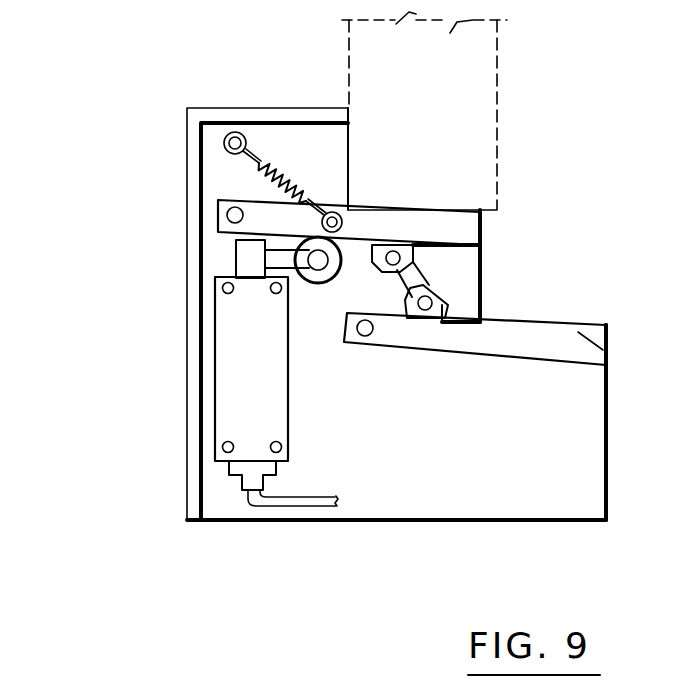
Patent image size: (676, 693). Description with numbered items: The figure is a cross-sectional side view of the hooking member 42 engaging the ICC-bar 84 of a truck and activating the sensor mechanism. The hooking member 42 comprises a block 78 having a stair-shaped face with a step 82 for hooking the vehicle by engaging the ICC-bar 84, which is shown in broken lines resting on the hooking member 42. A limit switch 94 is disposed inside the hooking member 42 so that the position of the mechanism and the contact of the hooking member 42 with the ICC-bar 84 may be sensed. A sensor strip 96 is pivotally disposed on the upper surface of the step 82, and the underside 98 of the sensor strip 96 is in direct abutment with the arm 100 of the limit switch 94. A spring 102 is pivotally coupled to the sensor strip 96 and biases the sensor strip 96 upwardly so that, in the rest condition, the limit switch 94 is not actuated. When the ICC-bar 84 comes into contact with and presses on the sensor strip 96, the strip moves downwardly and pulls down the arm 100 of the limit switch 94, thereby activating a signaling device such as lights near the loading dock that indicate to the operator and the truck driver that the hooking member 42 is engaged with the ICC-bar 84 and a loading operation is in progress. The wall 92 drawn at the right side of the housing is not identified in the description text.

The hooking member 42 is at (135, 228).
The block 78 is at (189, 291).
The step 82 is at (598, 323).
The ICC-bar 84 is at (492, 100).
The housing wall 92 is at (592, 449).
The limit switch 94 is at (280, 402).
The sensor strip 96 is at (452, 233).
The underside 98 is at (358, 246).
The arm 100 is at (292, 267).
The spring 102 is at (270, 163).